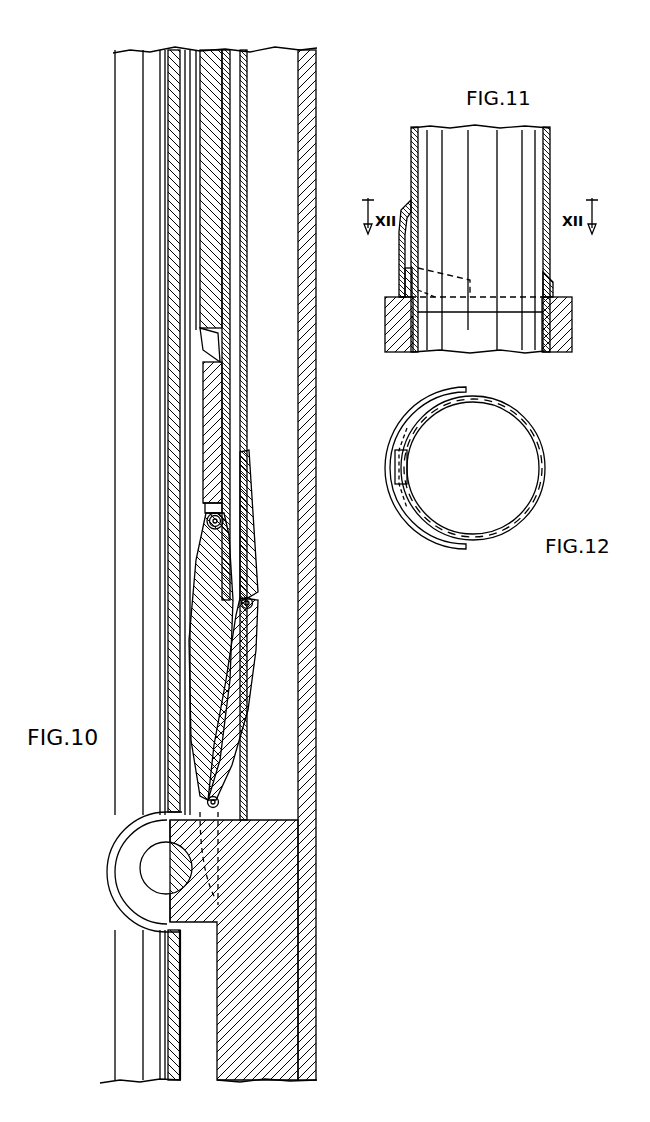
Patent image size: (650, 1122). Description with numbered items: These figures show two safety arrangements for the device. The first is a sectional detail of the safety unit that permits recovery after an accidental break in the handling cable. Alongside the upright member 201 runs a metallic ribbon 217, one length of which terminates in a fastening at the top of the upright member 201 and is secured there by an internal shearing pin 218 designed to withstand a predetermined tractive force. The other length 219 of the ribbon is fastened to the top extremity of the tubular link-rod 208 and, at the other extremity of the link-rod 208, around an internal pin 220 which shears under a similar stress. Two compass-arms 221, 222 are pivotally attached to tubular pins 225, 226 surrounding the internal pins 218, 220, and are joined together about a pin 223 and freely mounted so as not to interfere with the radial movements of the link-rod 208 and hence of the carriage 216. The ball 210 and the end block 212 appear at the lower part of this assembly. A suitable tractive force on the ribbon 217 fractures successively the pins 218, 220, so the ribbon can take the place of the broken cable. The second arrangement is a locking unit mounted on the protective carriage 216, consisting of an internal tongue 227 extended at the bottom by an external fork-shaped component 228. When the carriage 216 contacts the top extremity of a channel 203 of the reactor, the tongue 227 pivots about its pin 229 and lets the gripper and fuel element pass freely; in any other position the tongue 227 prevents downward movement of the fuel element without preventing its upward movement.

In FIG. 10, the upright member 201 is at (309, 92).
In FIG. 11, the channel 203 is at (562, 302).
In FIG. 10, the tubular link-rod 208 is at (215, 50).
In FIG. 10, the ball 210 is at (150, 862).
In FIG. 10, the end block 212 is at (262, 885).
In FIG. 10, the carriage 216 is at (181, 236).
In FIG. 11, the carriage 216 is at (550, 149).
In FIG. 12, the carriage 216 is at (445, 412).
In FIG. 10, the metallic ribbon 217 is at (247, 207).
In FIG. 10, the internal shearing pin 218 is at (253, 604).
In FIG. 10, the other length of the ribbon 219 is at (232, 50).
In FIG. 10, the internal pin 220 is at (210, 528).
In FIG. 10, the compass-arm 221 is at (248, 717).
In FIG. 10, the compass-arm 222 is at (190, 642).
In FIG. 10, the pin 223 is at (220, 803).
In FIG. 10, the tubular pin 225 is at (253, 599).
In FIG. 10, the tubular pin 226 is at (209, 521).
In FIG. 11, the internal tongue 227 is at (399, 240).
In FIG. 12, the internal tongue 227 is at (410, 463).
In FIG. 11, the external fork-shaped component 228 is at (455, 290).
In FIG. 12, the external fork-shaped component 228 is at (462, 390).
In FIG. 11, the pin 229 is at (400, 290).
In FIG. 12, the pin 229 is at (404, 427).